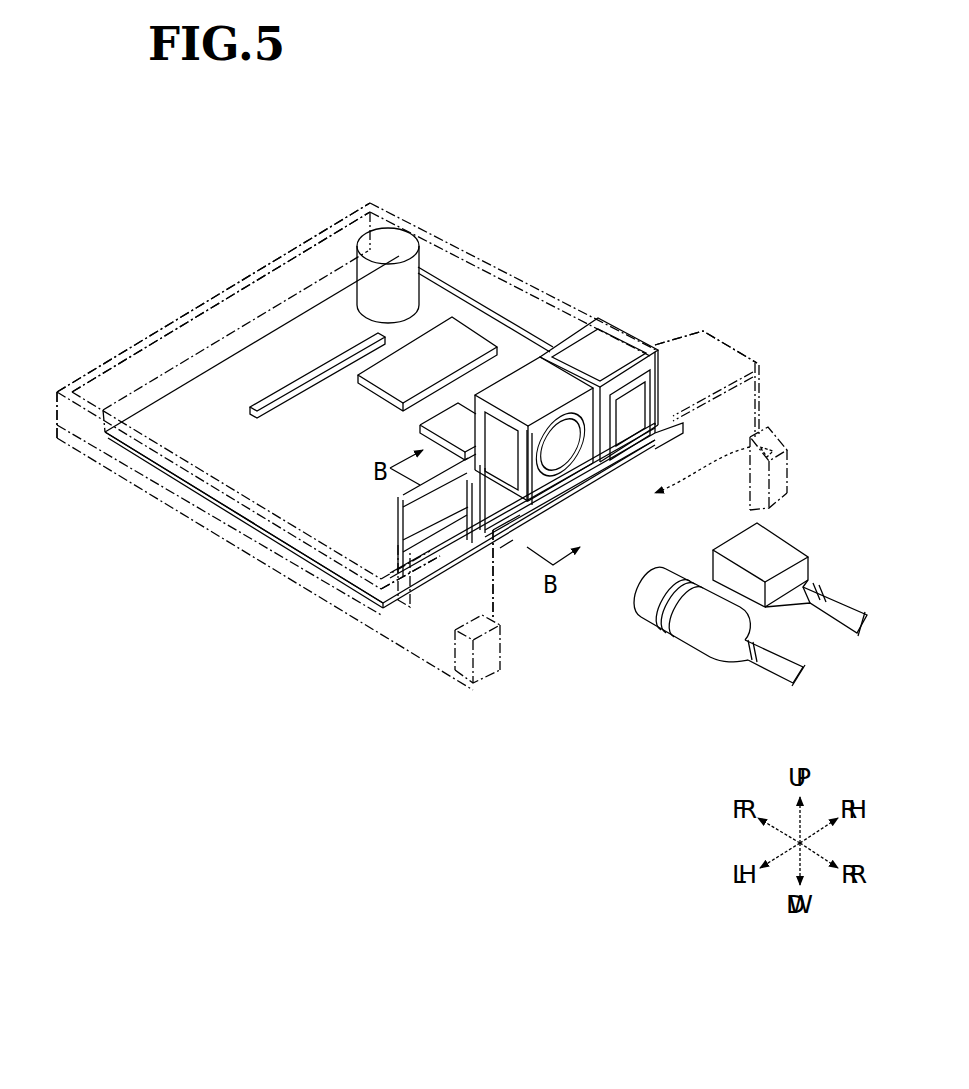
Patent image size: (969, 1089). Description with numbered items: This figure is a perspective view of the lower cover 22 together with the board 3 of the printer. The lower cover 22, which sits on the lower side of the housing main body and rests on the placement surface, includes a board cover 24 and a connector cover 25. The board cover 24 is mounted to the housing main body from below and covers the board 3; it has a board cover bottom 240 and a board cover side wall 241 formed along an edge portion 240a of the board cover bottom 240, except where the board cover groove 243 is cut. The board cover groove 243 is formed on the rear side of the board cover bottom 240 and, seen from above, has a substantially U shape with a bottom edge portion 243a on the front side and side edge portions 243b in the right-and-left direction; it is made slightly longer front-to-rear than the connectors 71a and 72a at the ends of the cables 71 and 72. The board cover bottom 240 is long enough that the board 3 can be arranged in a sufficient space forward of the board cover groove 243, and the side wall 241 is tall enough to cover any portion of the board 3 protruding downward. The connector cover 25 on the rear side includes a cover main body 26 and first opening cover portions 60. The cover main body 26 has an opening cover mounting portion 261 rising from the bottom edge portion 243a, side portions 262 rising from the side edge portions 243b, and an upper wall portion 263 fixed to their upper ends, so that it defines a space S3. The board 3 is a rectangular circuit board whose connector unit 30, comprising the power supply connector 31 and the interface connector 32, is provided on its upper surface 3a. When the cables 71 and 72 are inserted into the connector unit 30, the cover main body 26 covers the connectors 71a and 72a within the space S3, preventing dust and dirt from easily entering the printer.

The board 3 is at (207, 447).
The upper surface 3a is at (278, 488).
The lower cover 22 is at (80, 438).
The board cover 24 is at (112, 322).
The board cover bottom 240 is at (220, 353).
The edge portion 240a is at (273, 297).
The board cover side wall 241 is at (300, 265).
The connector cover 25 is at (775, 375).
The cover main body 26 is at (460, 605).
The opening cover mounting portion 261 is at (348, 600).
The side portions 262 is at (417, 607).
The upper wall portion 263 is at (716, 352).
The connector unit 30 is at (576, 357).
The power supply connector 31 is at (518, 385).
The interface connector 32 is at (585, 353).
The first opening cover portion 60 is at (507, 545).
The cable 71 is at (719, 667).
The connector 71a is at (660, 627).
The cable 72 is at (790, 552).
The connector 72a is at (775, 550).
The board cover groove 243 is at (604, 544).
The bottom edge portion 243a is at (595, 503).
The side edge portions 243b is at (672, 412).
The space S3 is at (760, 437).